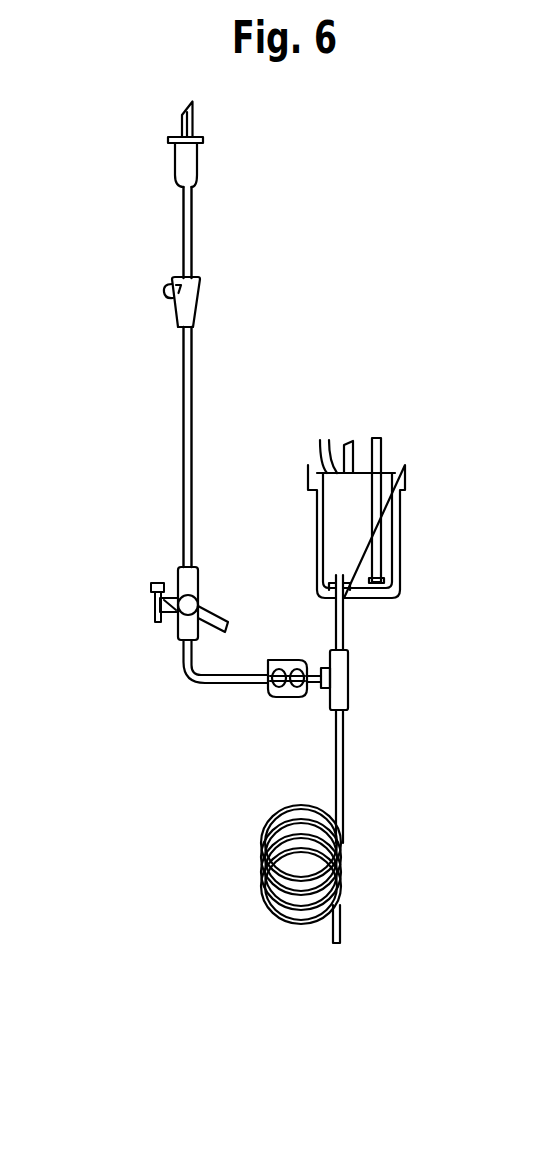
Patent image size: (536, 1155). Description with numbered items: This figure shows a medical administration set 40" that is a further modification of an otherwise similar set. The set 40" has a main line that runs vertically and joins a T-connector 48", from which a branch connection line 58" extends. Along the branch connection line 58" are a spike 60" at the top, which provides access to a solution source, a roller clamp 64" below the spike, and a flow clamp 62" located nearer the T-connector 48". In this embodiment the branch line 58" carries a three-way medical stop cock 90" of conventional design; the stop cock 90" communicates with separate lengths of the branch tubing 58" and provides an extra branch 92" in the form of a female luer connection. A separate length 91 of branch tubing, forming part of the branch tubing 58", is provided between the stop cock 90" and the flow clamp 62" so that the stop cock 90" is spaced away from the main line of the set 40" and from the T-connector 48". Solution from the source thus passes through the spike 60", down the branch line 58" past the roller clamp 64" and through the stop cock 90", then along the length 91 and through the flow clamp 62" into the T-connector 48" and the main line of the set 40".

The spike 60 is at (198, 164).
The roller clamp 64 is at (175, 308).
The three-way medical stop cock 90 is at (152, 608).
The extra branch 92 is at (171, 590).
The branch connection line 58 is at (192, 688).
The separate length of branch tubing 91 is at (247, 686).
The flow clamp 62 is at (270, 660).
The T-connector 48 is at (348, 681).
The set 40 is at (345, 787).